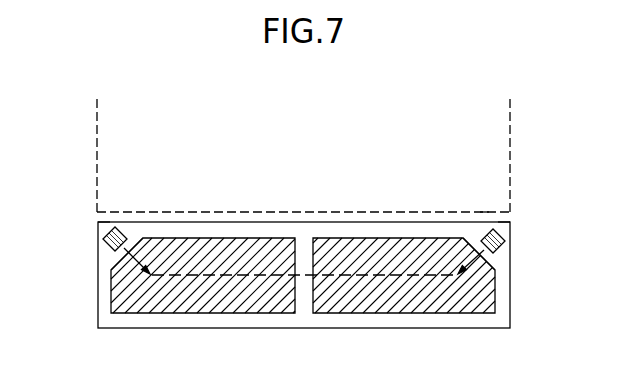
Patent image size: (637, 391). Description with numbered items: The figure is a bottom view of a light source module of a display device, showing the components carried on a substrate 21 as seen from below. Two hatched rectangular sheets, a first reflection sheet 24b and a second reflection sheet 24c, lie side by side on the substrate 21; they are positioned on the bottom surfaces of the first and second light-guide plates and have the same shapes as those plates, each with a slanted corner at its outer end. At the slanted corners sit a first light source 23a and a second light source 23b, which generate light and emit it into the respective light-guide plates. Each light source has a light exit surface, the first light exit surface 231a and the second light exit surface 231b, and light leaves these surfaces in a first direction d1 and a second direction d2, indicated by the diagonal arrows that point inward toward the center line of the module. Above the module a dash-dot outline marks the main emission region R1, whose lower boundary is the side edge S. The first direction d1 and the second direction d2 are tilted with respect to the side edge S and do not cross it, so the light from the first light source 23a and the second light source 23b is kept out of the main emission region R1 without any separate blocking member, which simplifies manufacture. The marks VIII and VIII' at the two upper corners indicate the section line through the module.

The substrate 21 is at (97, 287).
The first light source 23a is at (103, 237).
The second light source 23b is at (500, 233).
The first light exit surface 231a is at (137, 237).
The second light exit surface 231b is at (472, 237).
The first reflection sheet 24b is at (200, 315).
The second reflection sheet 24c is at (407, 315).
The first direction d1 is at (112, 268).
The second direction d2 is at (495, 267).
The main emission region R1 is at (502, 124).
The side edge S is at (485, 210).
The section line VIII is at (81, 204).
The section line VIII' is at (529, 204).